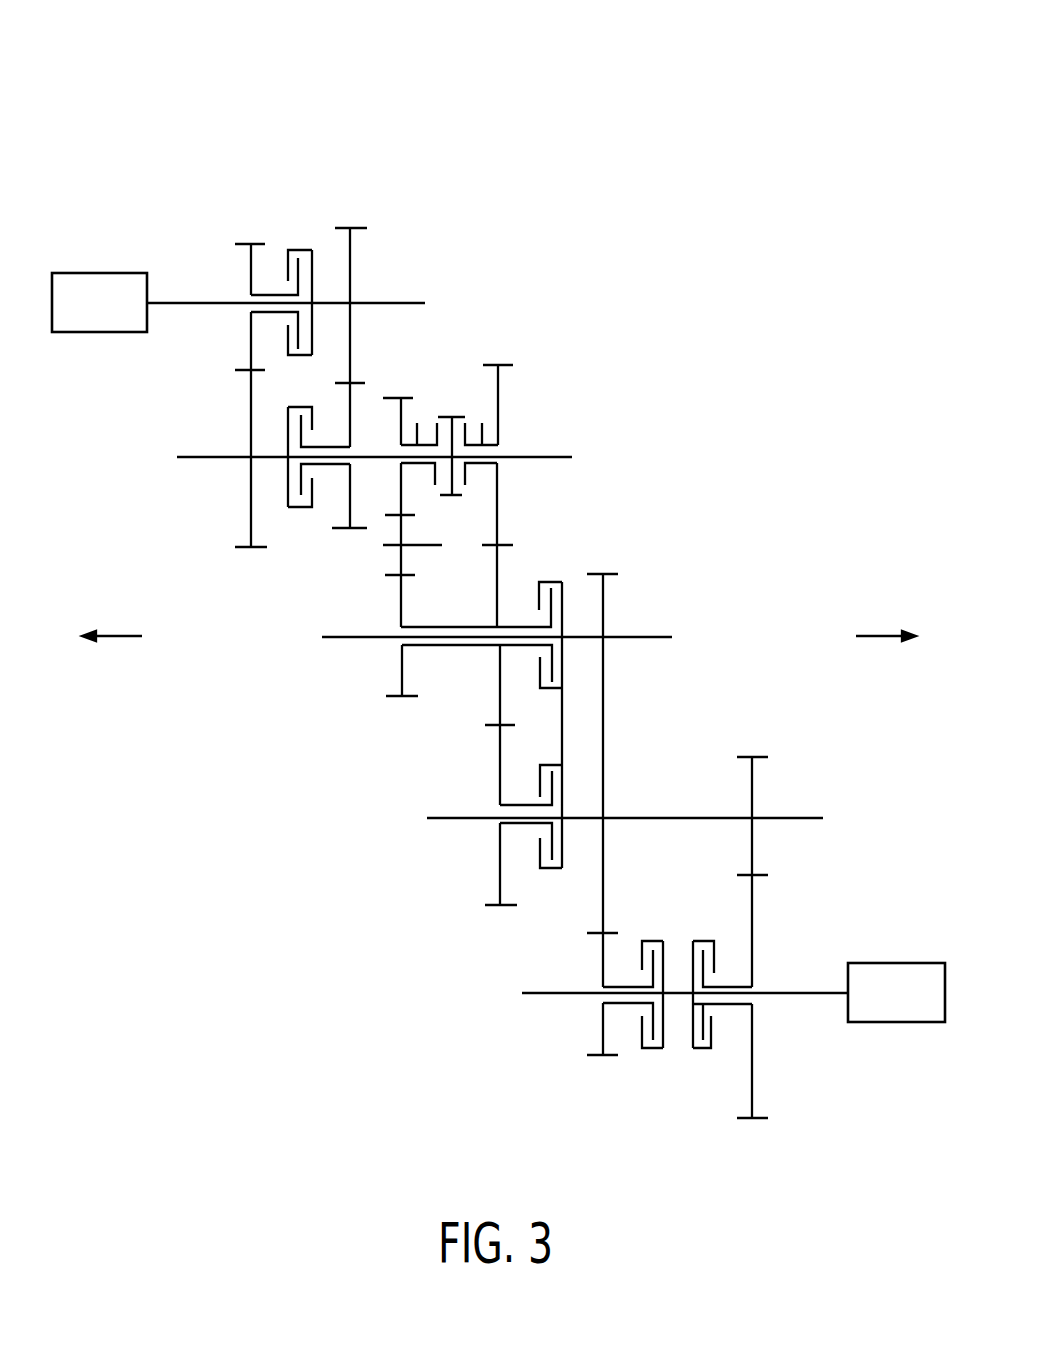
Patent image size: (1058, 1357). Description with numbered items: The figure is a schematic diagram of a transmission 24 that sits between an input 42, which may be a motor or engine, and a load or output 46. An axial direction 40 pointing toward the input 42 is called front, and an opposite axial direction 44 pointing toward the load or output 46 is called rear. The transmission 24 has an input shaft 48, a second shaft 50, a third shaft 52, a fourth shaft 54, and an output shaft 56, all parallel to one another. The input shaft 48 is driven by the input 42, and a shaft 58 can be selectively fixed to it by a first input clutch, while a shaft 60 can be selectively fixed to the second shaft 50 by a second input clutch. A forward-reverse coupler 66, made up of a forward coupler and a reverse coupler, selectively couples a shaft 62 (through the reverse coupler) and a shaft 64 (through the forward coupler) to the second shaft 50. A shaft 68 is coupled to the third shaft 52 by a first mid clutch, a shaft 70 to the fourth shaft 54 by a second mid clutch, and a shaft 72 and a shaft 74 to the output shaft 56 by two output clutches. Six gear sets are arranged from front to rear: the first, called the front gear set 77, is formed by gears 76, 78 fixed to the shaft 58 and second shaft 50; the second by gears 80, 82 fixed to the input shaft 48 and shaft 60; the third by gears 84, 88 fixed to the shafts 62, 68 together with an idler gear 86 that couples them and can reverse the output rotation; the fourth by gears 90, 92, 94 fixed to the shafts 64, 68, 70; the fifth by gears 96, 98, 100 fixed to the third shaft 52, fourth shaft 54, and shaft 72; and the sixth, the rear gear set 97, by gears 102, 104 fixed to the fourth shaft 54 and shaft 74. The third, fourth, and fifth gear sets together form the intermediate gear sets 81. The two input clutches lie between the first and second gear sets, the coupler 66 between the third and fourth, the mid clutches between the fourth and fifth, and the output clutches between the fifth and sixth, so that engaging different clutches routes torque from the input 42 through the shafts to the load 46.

The transmission 24 is at (140, 105).
The input 42 is at (102, 272).
The input shaft 48 is at (193, 301).
The gear 76 is at (249, 268).
The shaft 58 is at (274, 294).
The gear 78 is at (250, 498).
The gear 80 is at (352, 268).
The shaft 60 is at (343, 446).
The gear 82 is at (347, 497).
The second shaft 50 is at (207, 456).
The gear 84 is at (398, 418).
The shaft 62 is at (416, 423).
The forward-reverse coupler 66 is at (452, 388).
The shaft 64 is at (482, 423).
The gear 90 is at (498, 400).
The gear 86 is at (399, 532).
The shaft 68 is at (476, 627).
The shaft 70 is at (523, 803).
The gear 88 is at (400, 672).
The gear 92 is at (498, 680).
The third shaft 52 is at (362, 640).
The gear 96 is at (606, 608).
The fourth shaft 54 is at (460, 816).
The gear 94 is at (498, 865).
The gear 98 is at (605, 780).
The gear 102 is at (754, 788).
The gear 104 is at (754, 935).
The output shaft 56 is at (565, 992).
The load or output 46 is at (902, 963).
The shaft 72 is at (627, 1003).
The shaft 74 is at (725, 1004).
The gear 100 is at (601, 1028).
The rear gear set 97 is at (773, 1135).
The front gear set 77 is at (243, 578).
The intermediate gear sets 81 is at (385, 722).
The axial direction 40 is at (117, 636).
The axial direction 44 is at (870, 636).